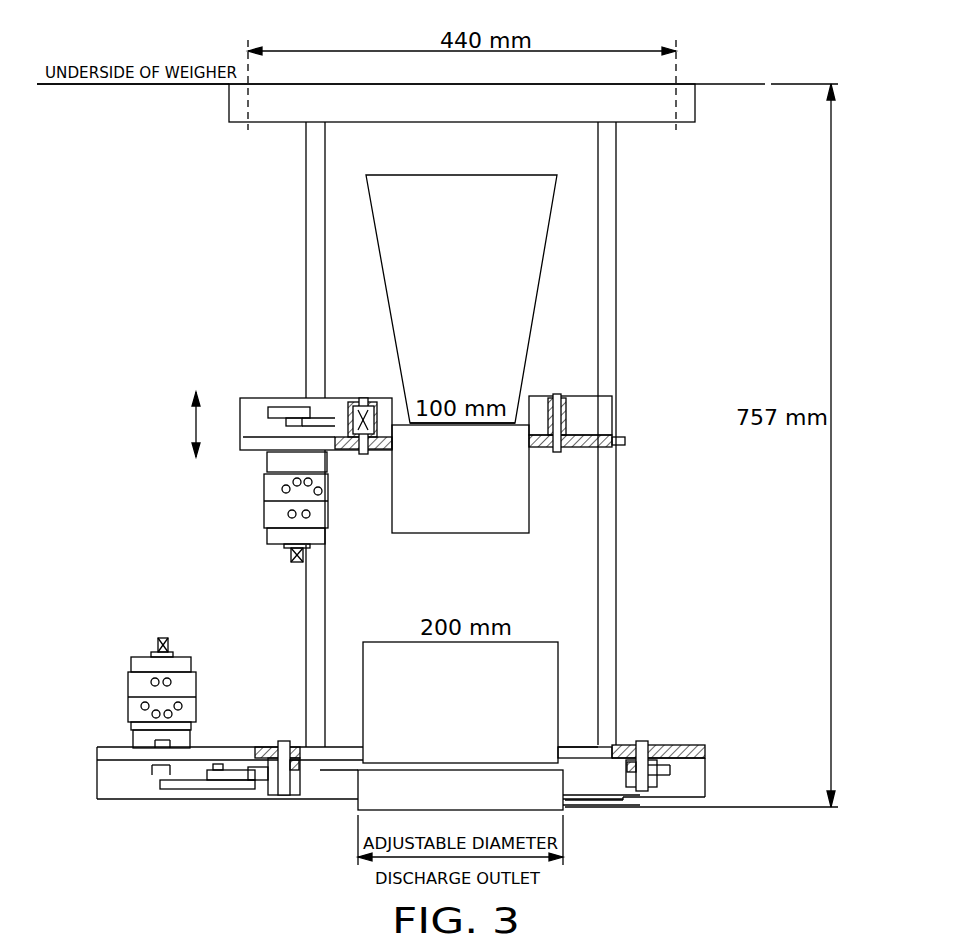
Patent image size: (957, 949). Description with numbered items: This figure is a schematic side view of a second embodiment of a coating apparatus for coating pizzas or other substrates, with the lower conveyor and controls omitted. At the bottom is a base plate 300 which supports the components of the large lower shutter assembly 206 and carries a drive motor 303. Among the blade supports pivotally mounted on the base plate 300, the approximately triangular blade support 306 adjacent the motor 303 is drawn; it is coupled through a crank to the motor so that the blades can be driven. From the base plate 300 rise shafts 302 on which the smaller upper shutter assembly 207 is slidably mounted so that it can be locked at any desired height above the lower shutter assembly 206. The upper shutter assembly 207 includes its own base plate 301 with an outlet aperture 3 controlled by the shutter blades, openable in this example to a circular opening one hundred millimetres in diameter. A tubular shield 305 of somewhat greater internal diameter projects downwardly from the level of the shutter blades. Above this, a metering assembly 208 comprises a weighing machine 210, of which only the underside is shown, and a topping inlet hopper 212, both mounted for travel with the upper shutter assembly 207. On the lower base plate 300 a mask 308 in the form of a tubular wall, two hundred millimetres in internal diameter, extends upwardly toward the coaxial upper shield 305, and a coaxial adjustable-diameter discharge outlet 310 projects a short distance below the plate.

The lower shutter assembly 206 is at (95, 773).
The upper shutter assembly 207 is at (265, 398).
The metering assembly 208 is at (690, 66).
The weighing machine 210 is at (710, 85).
The topping inlet hopper 212 is at (552, 215).
The base plate 300 is at (695, 745).
The base plate 301 is at (604, 430).
The shafts 302 is at (617, 493).
The drive motor 303 is at (128, 688).
The tubular shield 305 is at (530, 515).
The blade support 306 is at (232, 770).
The mask 308 is at (558, 672).
The adjustable-diameter discharge outlet 310 is at (560, 802).
The outlet aperture 3 is at (525, 440).